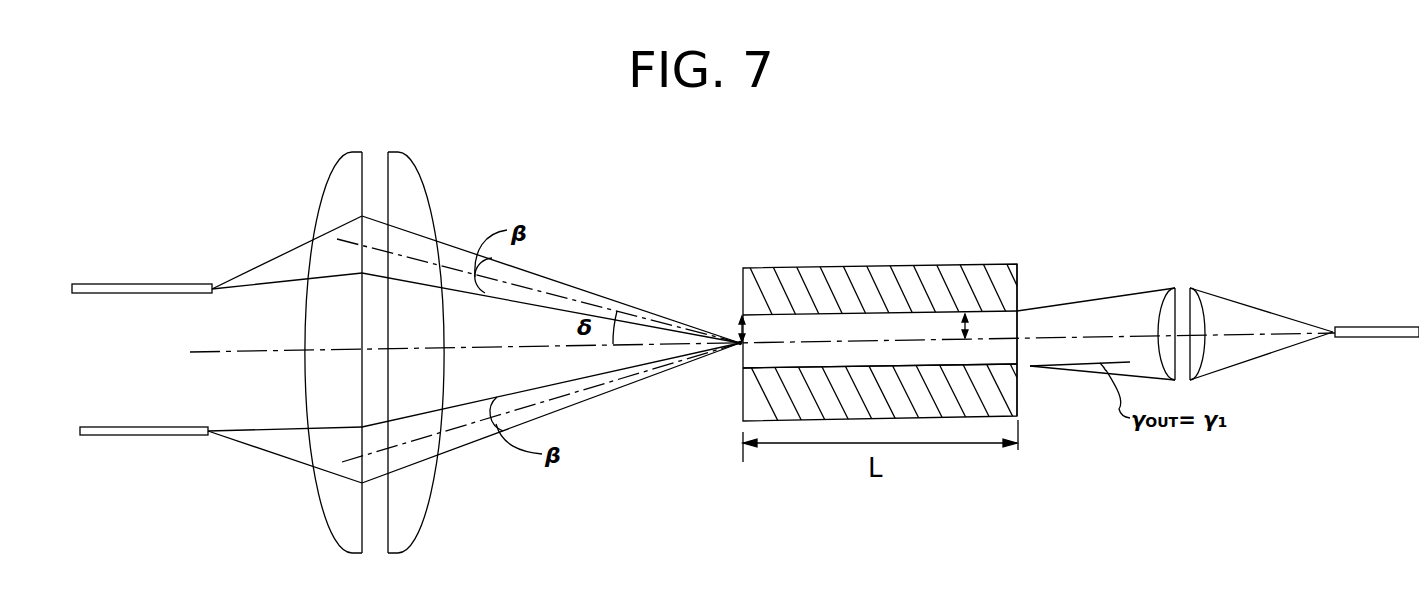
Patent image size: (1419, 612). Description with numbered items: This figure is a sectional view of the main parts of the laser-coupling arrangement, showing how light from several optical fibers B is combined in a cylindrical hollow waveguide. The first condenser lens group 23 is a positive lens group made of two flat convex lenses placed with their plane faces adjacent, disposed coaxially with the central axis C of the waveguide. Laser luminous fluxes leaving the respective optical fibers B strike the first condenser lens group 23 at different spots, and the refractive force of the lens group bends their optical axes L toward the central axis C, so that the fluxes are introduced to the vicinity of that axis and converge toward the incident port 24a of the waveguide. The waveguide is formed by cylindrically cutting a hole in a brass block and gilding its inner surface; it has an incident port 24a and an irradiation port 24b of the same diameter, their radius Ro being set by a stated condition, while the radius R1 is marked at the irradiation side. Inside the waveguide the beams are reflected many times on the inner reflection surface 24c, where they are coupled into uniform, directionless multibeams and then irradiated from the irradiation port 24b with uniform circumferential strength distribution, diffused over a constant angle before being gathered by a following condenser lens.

The first condenser lens group 23 is at (397, 553).
The incident port 24a is at (742, 407).
The irradiation port 24b is at (1020, 392).
The inner reflection surface 24c is at (905, 366).
The optical fiber B is at (150, 284).
The optical axis L is at (413, 258).
The central axis C is at (742, 362).
The radius of the incident port and irradiation port Ro is at (727, 321).
The bore radius at output R1 is at (979, 327).